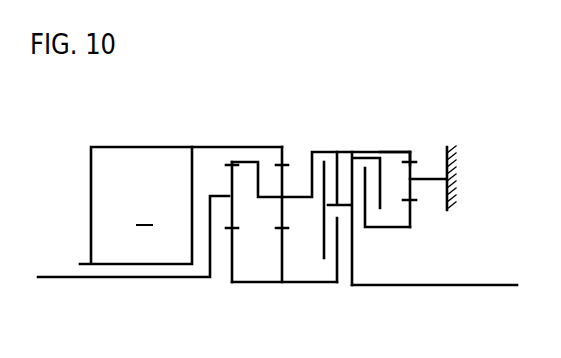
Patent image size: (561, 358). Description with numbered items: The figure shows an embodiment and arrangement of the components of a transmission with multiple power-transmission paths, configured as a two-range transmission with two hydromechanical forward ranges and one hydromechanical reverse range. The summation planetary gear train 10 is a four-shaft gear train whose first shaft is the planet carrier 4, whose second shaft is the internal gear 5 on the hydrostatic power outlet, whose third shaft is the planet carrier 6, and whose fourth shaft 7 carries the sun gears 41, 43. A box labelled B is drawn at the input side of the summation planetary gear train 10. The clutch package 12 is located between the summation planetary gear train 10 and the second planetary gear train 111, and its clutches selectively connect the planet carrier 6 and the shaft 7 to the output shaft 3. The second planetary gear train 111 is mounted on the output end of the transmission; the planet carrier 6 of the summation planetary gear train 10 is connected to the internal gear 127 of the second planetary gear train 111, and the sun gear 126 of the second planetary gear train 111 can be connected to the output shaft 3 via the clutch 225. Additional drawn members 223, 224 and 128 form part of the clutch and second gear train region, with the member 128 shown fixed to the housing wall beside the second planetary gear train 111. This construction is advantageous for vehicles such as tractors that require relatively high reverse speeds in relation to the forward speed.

The output shaft 3 is at (478, 285).
The planet carrier 4 is at (220, 191).
The internal gear 5 is at (281, 150).
The planet carrier 6 is at (298, 192).
The fourth shaft 7 is at (305, 285).
The summation planetary gear train 10 is at (228, 139).
The clutch package 12 is at (333, 142).
The sun gear 41 is at (228, 254).
The sun gear 43 is at (280, 254).
The second planetary gear train 111 is at (408, 140).
The sun gear 126 is at (410, 228).
The internal gear 127 is at (413, 150).
The shaft to fixed wall 128 is at (425, 179).
The clutch housing 223 is at (365, 148).
The inner plate 224 is at (329, 259).
The clutch 225 is at (368, 201).
The box B is at (136, 205).